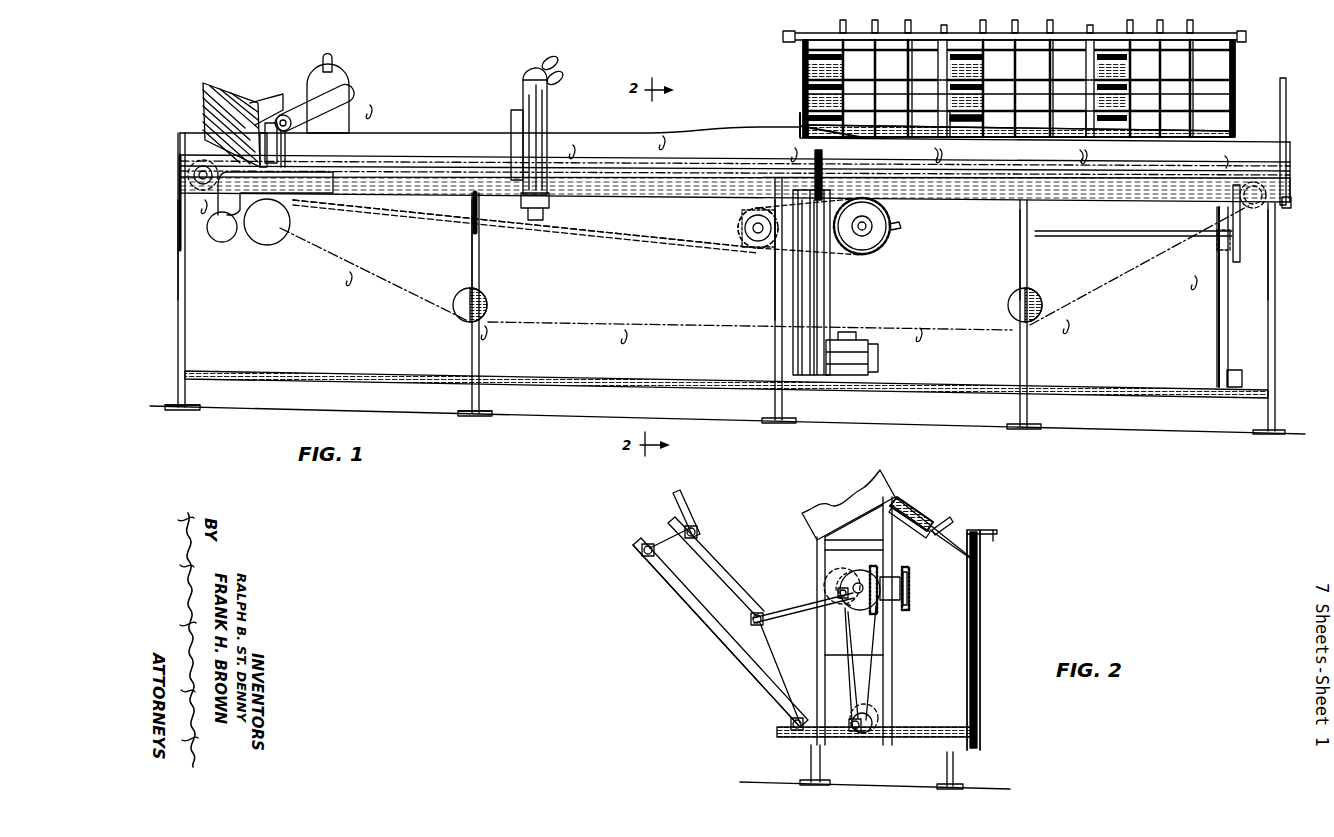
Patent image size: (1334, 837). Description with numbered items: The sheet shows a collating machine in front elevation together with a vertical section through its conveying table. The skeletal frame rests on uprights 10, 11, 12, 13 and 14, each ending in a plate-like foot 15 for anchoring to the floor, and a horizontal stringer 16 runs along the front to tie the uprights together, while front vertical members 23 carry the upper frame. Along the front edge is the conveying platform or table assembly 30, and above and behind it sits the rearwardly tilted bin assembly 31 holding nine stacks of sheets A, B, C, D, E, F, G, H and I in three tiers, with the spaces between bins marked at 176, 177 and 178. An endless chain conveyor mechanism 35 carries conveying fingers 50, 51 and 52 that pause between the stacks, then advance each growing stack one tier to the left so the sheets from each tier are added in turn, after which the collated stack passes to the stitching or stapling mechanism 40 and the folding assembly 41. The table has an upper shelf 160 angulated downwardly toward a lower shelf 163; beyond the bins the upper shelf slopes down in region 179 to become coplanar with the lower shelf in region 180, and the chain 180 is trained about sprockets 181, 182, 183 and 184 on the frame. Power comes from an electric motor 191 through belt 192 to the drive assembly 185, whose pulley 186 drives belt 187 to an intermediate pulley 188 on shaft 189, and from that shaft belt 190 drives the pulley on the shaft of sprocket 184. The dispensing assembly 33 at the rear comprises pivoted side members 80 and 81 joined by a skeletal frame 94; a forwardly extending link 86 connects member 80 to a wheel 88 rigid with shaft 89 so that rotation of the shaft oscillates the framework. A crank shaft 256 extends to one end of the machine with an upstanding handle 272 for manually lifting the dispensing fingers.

In FIG. 1, the upright 10 is at (176, 404).
In FIG. 1, the upright 11 is at (470, 401).
In FIG. 1, the upright 12 is at (774, 401).
In FIG. 2, the upright 12 is at (956, 768).
In FIG. 1, the upright 13 is at (1018, 408).
In FIG. 1, the upright 14 is at (1266, 413).
In FIG. 1, the plate-like foot 15 is at (190, 407).
In FIG. 1, the horizontal stringer 16 is at (312, 370).
In FIG. 1, the front vertical member 23 is at (180, 313).
In FIG. 1, the conveying platform or table assembly 30 is at (768, 114).
In FIG. 1, the bin assembly 31 is at (1246, 68).
In FIG. 2, the dispensing assembly 33 is at (688, 630).
In FIG. 1, the endless chain conveyor mechanism 35 is at (428, 312).
In FIG. 1, the stitching or stapling mechanism 40 is at (553, 100).
In FIG. 1, the folding assembly 41 is at (362, 98).
In FIG. 1, the conveying finger 50 is at (936, 156).
In FIG. 1, the conveying finger 51 is at (1080, 156).
In FIG. 1, the conveying finger 52 is at (1227, 159).
In FIG. 2, the forward side member 80 is at (738, 600).
In FIG. 2, the side member 81 is at (668, 594).
In FIG. 2, the forwardly extending link 86 is at (805, 612).
In FIG. 1, the wheel 88 is at (812, 200).
In FIG. 2, the wheel 88 is at (860, 572).
In FIG. 1, the shaft 89 is at (1130, 240).
In FIG. 2, the skeletal frame 94 is at (695, 500).
In FIG. 1, the upper shelf 160 is at (826, 133).
In FIG. 2, the upper shelf 160 is at (922, 516).
In FIG. 2, the lower shelf 163 is at (962, 557).
In FIG. 1, the crate compartment 176 is at (984, 70).
In FIG. 1, the crate compartment 177 is at (1017, 70).
In FIG. 1, the crate compartment 178 is at (1052, 70).
In FIG. 1, the sloped region 179 is at (727, 138).
In FIG. 2, the sloped region 179 is at (905, 508).
In FIG. 1, the endless chain 180 is at (583, 160).
In FIG. 2, the endless chain 180 is at (940, 534).
In FIG. 1, the sprocket 181 is at (488, 304).
In FIG. 1, the sprocket 182 is at (1035, 310).
In FIG. 1, the sprocket 183 is at (1255, 210).
In FIG. 1, the sprocket 184 is at (190, 203).
In FIG. 1, the drive assembly 185 is at (862, 262).
In FIG. 2, the drive assembly 185 is at (833, 567).
In FIG. 1, the pulley 186 is at (875, 219).
In FIG. 1, the belt 187 is at (800, 252).
In FIG. 1, the intermediate pulley 188 is at (755, 246).
In FIG. 2, the intermediate pulley 188 is at (910, 602).
In FIG. 1, the shaft 189 is at (745, 226).
In FIG. 1, the belt 190 is at (660, 240).
In FIG. 1, the electric motor 191 is at (876, 356).
In FIG. 2, the electric motor 191 is at (875, 722).
In FIG. 1, the belt 192 is at (815, 310).
In FIG. 2, the belt 192 is at (870, 668).
In FIG. 1, the crank shaft 256 is at (1292, 200).
In FIG. 1, the upstanding handle 272 is at (1290, 90).
In FIG. 1, the stack of sheets A is at (1214, 137).
In FIG. 1, the stack of sheets B is at (1222, 106).
In FIG. 1, the stack of sheets C is at (1202, 70).
In FIG. 1, the stack of sheets D is at (997, 128).
In FIG. 1, the stack of sheets E is at (966, 117).
In FIG. 1, the stack of sheets F is at (1066, 72).
In FIG. 1, the stack of sheets G is at (882, 136).
In FIG. 1, the stack of sheets H is at (808, 101).
In FIG. 1, the stack of sheets I is at (915, 72).